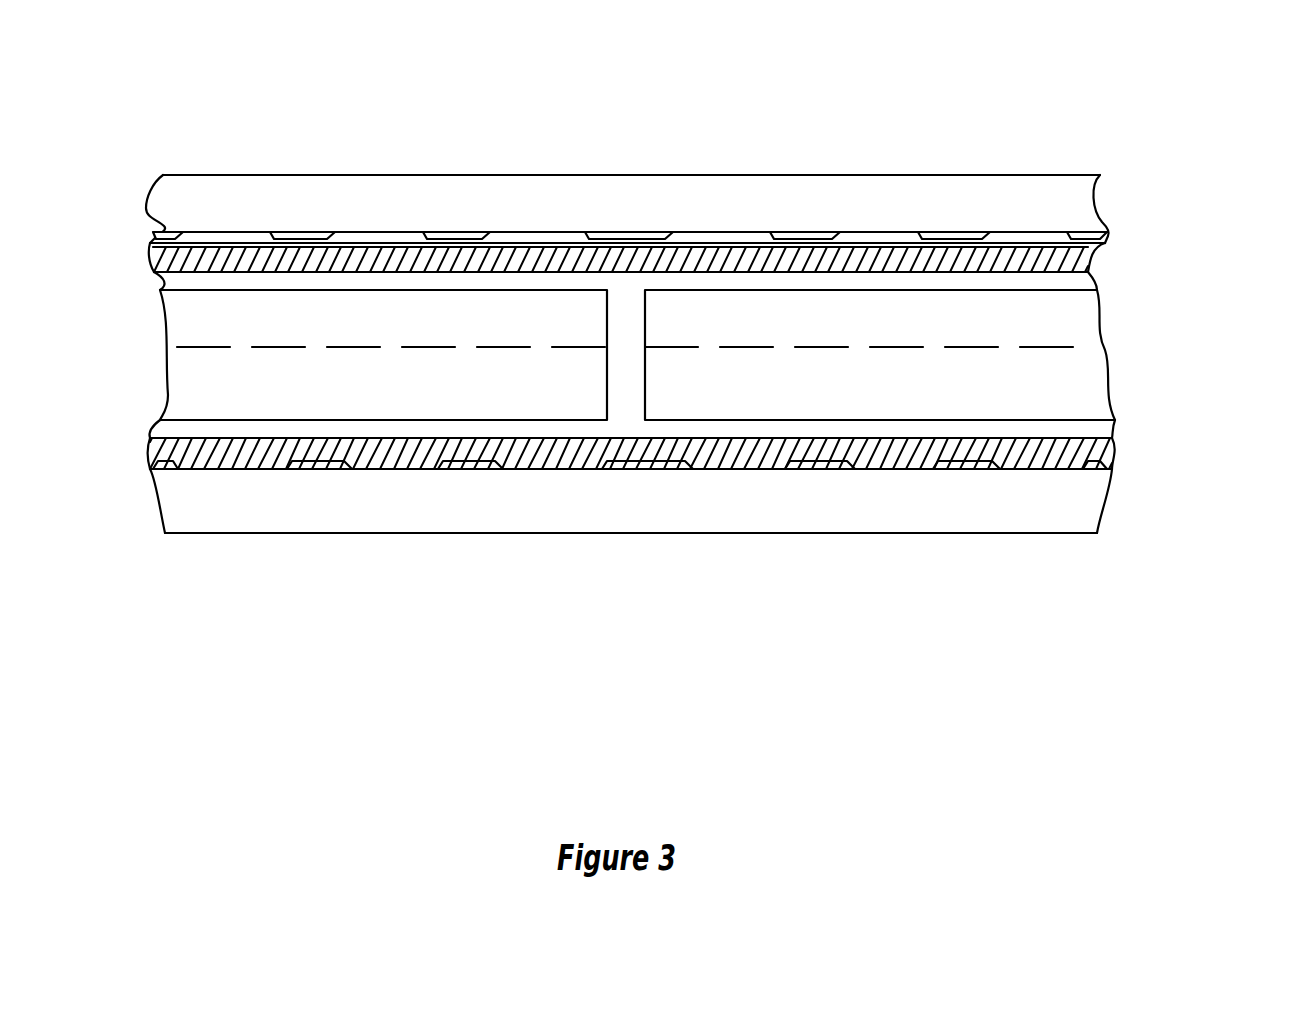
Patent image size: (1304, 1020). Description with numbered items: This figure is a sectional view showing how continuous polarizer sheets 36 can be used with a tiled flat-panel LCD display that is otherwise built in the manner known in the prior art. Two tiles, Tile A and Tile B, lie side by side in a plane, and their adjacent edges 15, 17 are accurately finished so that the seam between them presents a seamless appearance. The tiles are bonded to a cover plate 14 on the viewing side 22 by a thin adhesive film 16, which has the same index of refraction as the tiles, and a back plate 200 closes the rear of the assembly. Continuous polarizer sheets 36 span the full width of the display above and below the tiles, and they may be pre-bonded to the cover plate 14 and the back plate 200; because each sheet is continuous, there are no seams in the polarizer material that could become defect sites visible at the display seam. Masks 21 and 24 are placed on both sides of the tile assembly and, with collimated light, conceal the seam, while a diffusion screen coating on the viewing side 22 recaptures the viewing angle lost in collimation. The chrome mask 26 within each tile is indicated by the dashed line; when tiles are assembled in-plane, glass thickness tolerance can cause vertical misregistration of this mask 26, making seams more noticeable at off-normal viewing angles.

The viewing side 22 is at (776, 146).
The cover plate 14 is at (840, 190).
The masks 21 is at (213, 235).
The diffusion screen coating 24 is at (935, 232).
The continuous polarizer sheets 36 is at (158, 255).
The adhesive film 16 is at (1037, 280).
The adjacent edge 17 is at (605, 323).
The adjacent edge 15 is at (645, 330).
The chrome mask 26 is at (940, 350).
The back plate 200 is at (757, 513).